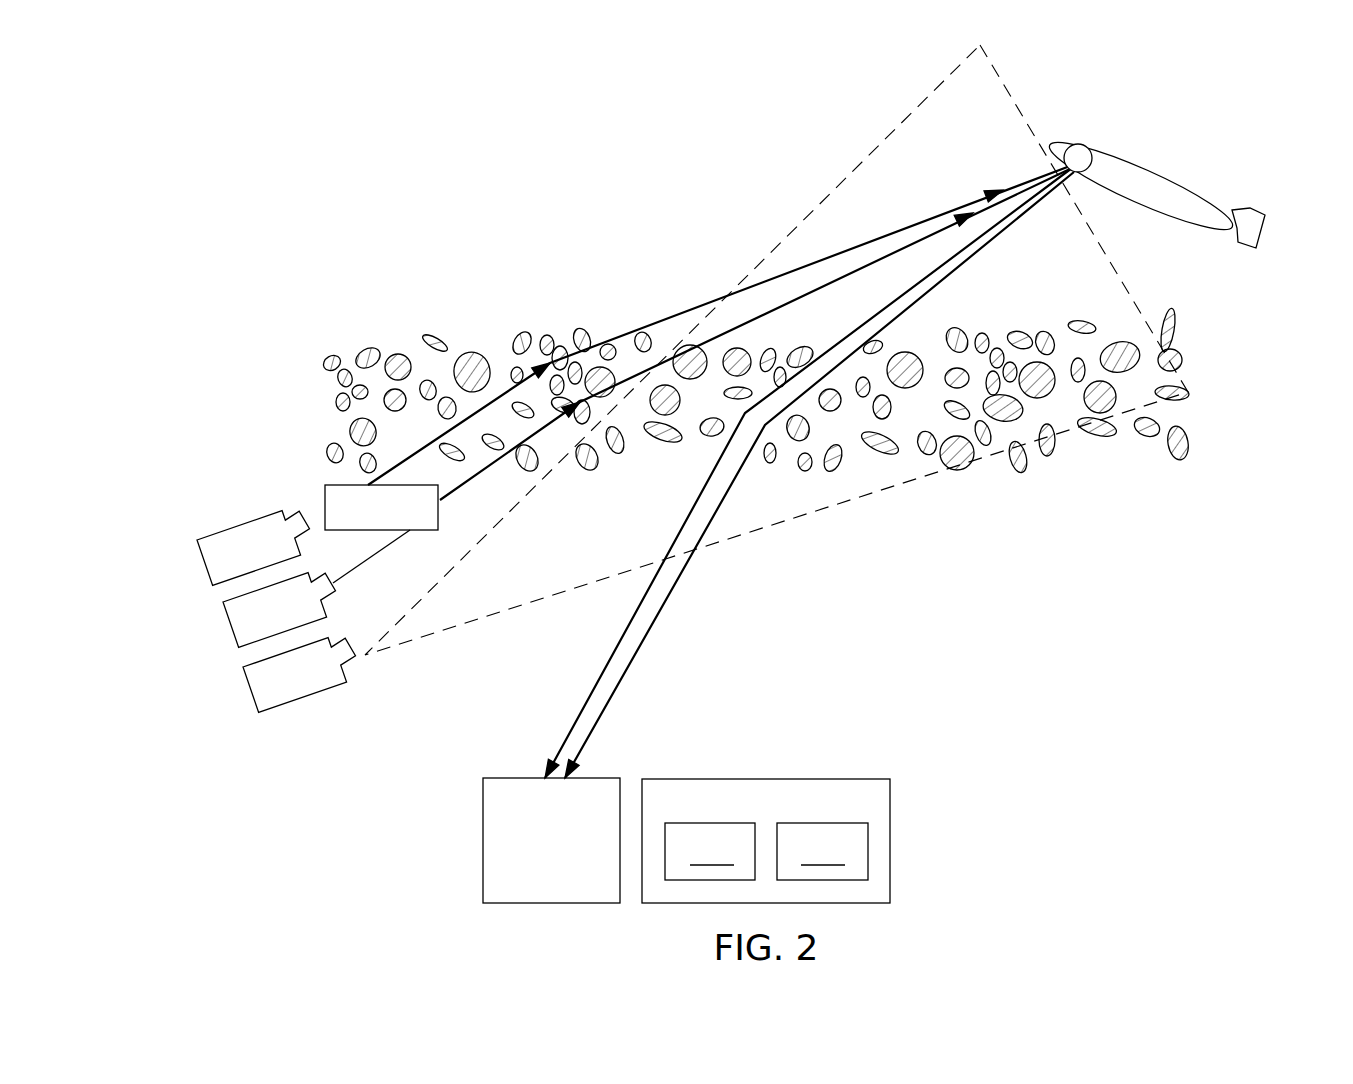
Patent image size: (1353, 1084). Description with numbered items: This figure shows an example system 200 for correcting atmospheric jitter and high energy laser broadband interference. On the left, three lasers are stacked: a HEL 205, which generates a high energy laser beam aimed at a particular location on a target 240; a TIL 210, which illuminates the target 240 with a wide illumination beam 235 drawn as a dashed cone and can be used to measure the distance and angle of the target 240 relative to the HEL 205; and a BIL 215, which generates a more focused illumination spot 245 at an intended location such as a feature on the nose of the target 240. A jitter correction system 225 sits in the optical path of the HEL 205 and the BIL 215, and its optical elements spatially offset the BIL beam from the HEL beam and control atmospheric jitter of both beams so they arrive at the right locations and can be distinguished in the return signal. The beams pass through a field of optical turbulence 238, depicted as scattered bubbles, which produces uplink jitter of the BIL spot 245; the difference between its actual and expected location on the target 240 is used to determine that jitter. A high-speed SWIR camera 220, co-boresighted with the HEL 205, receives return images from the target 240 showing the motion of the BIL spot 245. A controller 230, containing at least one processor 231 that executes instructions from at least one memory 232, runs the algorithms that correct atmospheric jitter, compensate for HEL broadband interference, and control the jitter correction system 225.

The system 200 is at (494, 160).
The HEL 205 is at (225, 627).
The TIL 210 is at (252, 690).
The BIL 215 is at (202, 563).
The camera 220 is at (482, 842).
The jitter correction system 225 is at (325, 502).
The controller 230 is at (811, 841).
The processor 231 is at (710, 851).
The memory 232 is at (822, 851).
The illumination beam 235 is at (845, 176).
The optical turbulence 238 is at (447, 352).
The target 240 is at (1152, 165).
The BIL spot 245 is at (1107, 152).